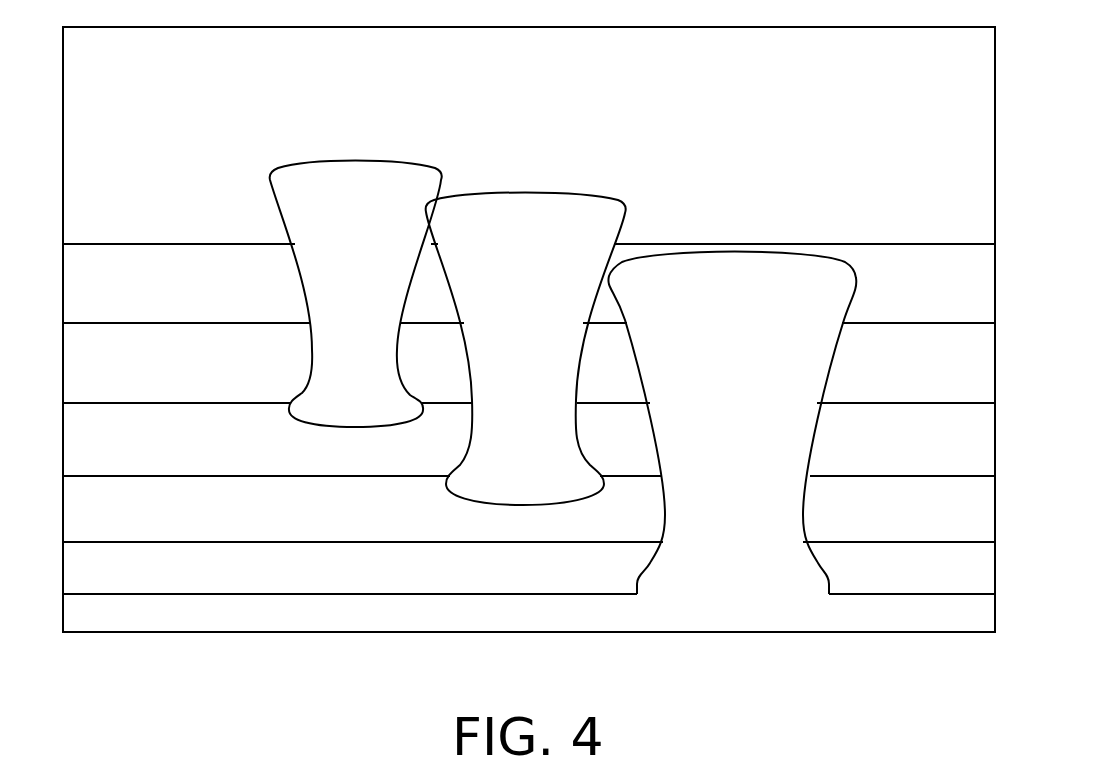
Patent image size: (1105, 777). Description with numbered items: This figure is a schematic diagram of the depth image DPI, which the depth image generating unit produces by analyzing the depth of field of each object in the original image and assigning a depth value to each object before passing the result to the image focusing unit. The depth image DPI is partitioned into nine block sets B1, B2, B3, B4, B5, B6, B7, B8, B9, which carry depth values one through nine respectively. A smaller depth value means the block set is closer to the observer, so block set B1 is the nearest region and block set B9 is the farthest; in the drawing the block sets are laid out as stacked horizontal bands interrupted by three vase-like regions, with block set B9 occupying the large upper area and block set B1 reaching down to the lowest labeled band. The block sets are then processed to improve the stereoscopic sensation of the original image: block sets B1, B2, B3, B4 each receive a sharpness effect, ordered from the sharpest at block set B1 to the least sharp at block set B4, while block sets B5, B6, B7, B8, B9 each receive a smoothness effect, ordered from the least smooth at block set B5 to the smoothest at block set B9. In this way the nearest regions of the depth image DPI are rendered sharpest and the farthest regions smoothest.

The depth image DPI is at (1078, 690).
The block set B1 is at (750, 584).
The block set B2 is at (365, 583).
The block set B3 is at (365, 522).
The block set B4 is at (545, 456).
The block set B5 is at (220, 457).
The block set B6 is at (375, 376).
The block set B7 is at (220, 376).
The block set B8 is at (220, 295).
The block set B9 is at (925, 158).